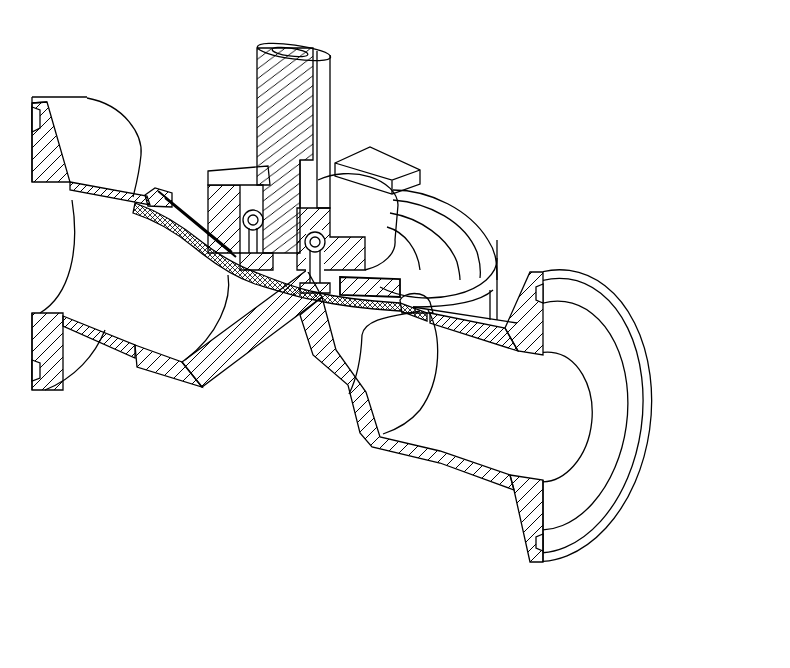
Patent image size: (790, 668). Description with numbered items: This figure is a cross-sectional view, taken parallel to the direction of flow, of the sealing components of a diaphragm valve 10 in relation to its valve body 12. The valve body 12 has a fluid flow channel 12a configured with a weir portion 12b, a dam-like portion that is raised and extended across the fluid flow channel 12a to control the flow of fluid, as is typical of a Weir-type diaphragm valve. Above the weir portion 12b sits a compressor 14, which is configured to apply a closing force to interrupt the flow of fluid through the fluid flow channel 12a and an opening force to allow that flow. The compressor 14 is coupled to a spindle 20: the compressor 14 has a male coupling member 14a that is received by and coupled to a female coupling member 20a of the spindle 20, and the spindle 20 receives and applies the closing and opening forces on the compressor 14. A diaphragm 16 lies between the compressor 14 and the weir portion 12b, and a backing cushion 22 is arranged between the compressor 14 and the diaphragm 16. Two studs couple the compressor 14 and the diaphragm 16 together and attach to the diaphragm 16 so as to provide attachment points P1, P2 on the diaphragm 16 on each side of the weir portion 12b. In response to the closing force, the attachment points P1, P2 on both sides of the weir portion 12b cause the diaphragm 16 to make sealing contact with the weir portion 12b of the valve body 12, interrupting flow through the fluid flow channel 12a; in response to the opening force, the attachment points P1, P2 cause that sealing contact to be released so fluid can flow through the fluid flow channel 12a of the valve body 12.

The diaphragm valve 10 is at (590, 137).
The valve body 12 is at (489, 242).
The fluid flow channel 12a is at (133, 316).
The weir portion 12b is at (300, 276).
The compressor 14 is at (460, 122).
The male coupling member 14a is at (257, 177).
The diaphragm 16 is at (338, 380).
The spindle 20 is at (294, 45).
The female coupling member 20a is at (323, 138).
The backing cushion 22 is at (146, 190).
The attachment point P1 is at (240, 345).
The attachment point P2 is at (302, 347).